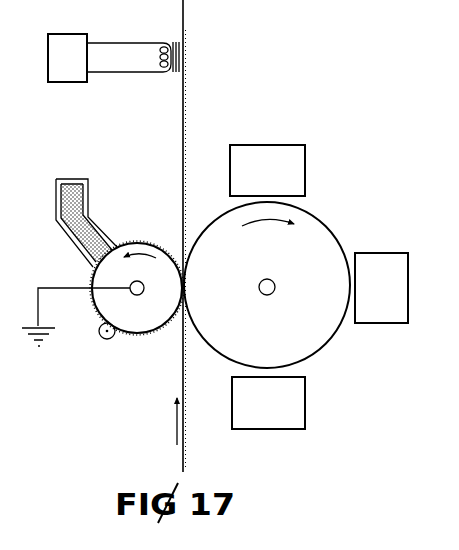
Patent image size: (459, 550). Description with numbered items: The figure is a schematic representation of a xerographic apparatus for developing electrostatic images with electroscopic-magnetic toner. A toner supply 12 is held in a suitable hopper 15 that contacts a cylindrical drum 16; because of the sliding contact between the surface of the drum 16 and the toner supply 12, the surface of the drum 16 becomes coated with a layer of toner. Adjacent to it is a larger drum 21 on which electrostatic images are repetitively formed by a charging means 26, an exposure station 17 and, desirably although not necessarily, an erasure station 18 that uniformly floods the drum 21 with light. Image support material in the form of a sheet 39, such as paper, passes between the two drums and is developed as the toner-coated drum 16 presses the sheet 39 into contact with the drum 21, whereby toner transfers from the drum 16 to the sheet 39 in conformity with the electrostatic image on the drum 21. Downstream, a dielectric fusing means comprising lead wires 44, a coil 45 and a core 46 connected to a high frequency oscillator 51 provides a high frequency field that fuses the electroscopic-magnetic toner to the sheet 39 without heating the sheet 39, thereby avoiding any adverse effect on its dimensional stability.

The toner supply 12 is at (78, 178).
The hopper 15 is at (58, 201).
The cylindrical drum 16 is at (92, 312).
The exposure station 17 is at (305, 401).
The erasure station 18 is at (266, 145).
The drum 21 is at (325, 343).
The charging means 26 is at (107, 340).
The sheet 39 is at (184, 124).
The lead wires 44 is at (129, 42).
The coil 45 is at (158, 64).
The core 46 is at (173, 42).
The high frequency oscillator 51 is at (70, 82).